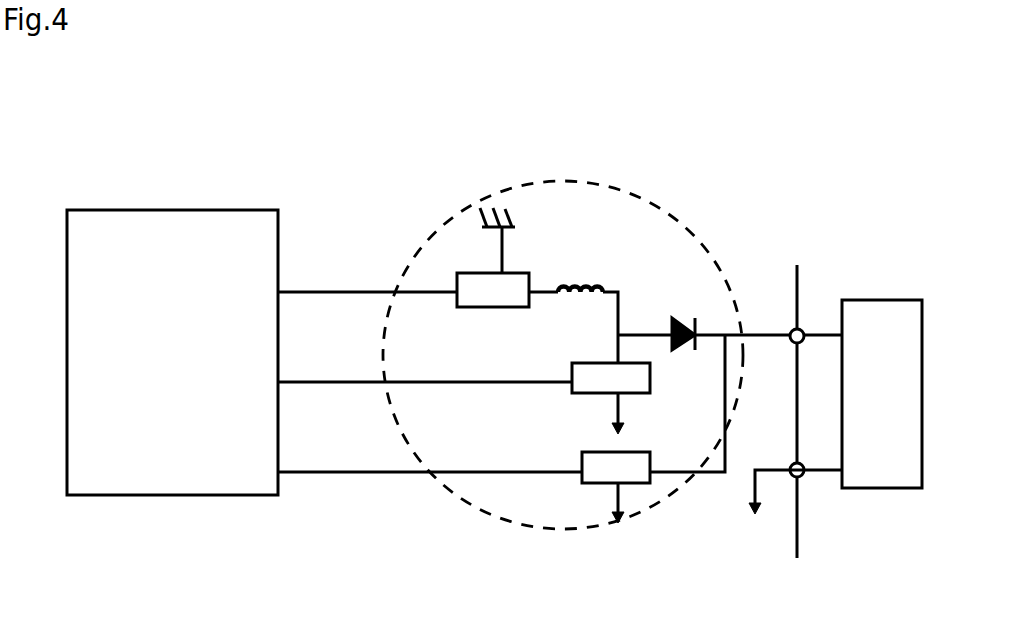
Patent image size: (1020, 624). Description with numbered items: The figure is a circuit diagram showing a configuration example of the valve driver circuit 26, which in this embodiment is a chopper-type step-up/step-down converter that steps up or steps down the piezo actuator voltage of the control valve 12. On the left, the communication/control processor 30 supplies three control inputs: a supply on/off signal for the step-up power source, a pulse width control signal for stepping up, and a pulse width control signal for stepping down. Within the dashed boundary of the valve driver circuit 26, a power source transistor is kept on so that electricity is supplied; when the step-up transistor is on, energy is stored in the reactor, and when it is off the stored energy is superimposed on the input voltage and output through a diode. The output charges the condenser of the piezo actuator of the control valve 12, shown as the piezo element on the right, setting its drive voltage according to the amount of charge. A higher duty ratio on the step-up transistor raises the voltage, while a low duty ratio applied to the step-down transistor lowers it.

The communication/control processor 30 is at (228, 210).
The valve driver circuit 26 is at (703, 250).
The control valve 12 is at (880, 490).